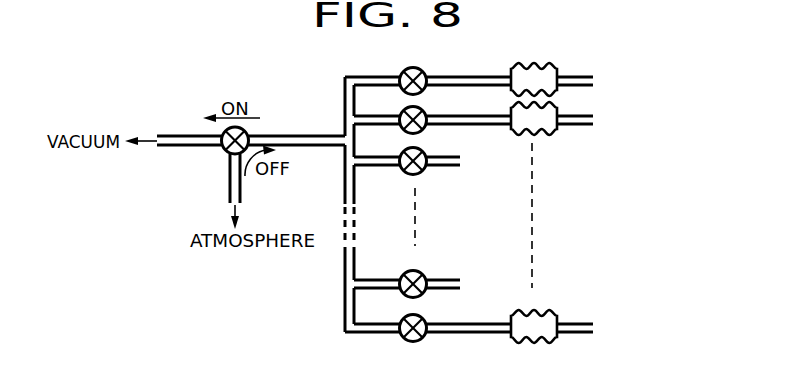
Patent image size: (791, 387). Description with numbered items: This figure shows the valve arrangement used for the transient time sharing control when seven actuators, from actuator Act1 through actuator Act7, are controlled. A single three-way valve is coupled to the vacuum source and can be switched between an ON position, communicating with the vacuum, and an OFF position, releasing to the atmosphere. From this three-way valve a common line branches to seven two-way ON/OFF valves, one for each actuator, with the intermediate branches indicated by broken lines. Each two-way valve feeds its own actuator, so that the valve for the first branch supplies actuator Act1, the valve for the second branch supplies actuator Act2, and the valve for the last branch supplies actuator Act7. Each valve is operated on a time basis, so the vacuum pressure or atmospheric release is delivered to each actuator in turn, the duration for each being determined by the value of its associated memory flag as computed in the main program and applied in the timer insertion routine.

The actuator Act1 is at (591, 81).
The actuator Act2 is at (593, 120).
The actuator Act7 is at (593, 319).